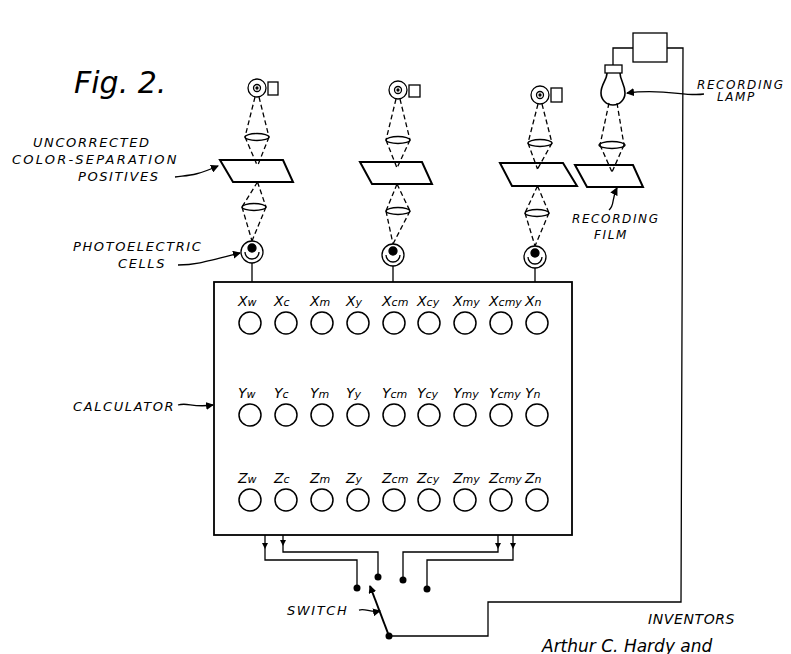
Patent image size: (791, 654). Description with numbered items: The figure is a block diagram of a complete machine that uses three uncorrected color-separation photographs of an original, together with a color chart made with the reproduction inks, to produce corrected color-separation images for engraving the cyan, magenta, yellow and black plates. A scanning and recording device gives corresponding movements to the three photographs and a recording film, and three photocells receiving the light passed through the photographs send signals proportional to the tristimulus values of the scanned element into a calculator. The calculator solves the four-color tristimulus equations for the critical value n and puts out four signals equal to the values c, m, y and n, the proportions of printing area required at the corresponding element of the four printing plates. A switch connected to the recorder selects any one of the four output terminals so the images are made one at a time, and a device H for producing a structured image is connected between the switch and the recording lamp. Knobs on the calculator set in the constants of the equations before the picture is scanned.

The device H is at (536, 334).
The critical value n is at (305, 563).
The cyan value c is at (331, 558).
The magenta value m is at (451, 559).
The yellow value y is at (476, 564).